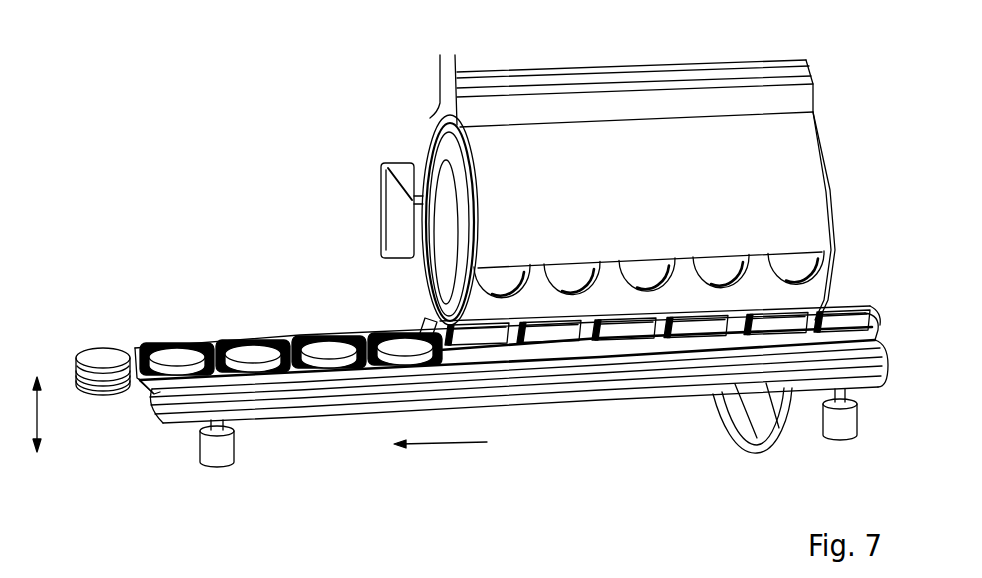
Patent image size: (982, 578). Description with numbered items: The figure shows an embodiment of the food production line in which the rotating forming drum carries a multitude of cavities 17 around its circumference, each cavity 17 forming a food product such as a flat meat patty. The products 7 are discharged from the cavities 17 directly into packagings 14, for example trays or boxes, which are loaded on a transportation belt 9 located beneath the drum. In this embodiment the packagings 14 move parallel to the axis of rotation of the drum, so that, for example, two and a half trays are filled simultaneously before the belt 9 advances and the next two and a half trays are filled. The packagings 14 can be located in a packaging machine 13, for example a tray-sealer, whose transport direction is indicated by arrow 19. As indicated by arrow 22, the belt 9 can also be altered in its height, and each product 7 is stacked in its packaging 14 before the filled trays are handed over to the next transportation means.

The product 7 is at (105, 357).
The transportation belt 9 is at (148, 402).
The packaging machine 13 is at (346, 447).
The packaging 14 is at (847, 337).
The cavity 17 is at (790, 272).
The transport direction of the packaging machine 19 is at (438, 445).
The shifting direction 22 is at (40, 415).